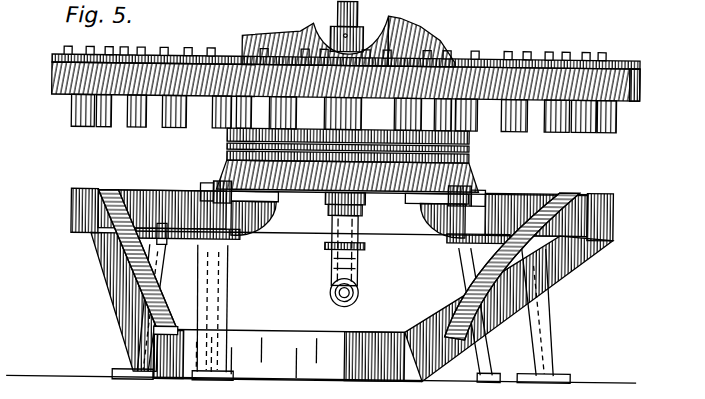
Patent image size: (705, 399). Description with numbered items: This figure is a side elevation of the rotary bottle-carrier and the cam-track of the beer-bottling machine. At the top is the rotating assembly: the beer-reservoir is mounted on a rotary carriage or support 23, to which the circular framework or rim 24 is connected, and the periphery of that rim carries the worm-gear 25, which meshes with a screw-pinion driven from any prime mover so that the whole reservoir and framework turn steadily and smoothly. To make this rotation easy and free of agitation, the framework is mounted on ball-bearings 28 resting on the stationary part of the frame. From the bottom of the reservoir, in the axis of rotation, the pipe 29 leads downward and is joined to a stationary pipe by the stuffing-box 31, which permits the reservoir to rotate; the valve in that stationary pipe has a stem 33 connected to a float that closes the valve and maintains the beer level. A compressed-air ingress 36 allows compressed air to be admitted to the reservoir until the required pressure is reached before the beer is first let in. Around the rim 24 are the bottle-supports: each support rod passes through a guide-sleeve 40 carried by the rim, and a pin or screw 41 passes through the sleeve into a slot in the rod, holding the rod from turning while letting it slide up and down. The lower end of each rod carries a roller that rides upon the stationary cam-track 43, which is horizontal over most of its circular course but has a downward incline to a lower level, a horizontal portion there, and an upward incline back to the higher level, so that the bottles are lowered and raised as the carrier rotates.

The rotary carriage 23 is at (448, 33).
The circular framework or rim 24 is at (633, 61).
The worm-gear 25 is at (55, 80).
The ball-bearings 28 is at (226, 146).
The pipe 29 is at (357, 13).
The stuffing-box 31 is at (342, 53).
The valve stem 33 is at (338, 5).
The compressed-air ingress 36 is at (363, 289).
The guide-sleeve 40 is at (76, 113).
The pin or screw 41 is at (345, 56).
The cam-track 43 is at (86, 188).